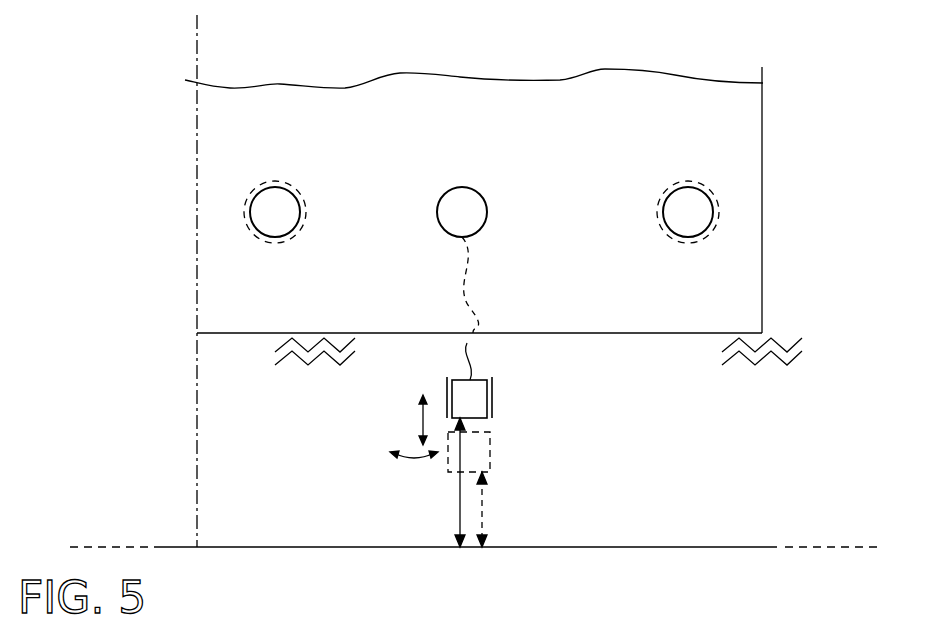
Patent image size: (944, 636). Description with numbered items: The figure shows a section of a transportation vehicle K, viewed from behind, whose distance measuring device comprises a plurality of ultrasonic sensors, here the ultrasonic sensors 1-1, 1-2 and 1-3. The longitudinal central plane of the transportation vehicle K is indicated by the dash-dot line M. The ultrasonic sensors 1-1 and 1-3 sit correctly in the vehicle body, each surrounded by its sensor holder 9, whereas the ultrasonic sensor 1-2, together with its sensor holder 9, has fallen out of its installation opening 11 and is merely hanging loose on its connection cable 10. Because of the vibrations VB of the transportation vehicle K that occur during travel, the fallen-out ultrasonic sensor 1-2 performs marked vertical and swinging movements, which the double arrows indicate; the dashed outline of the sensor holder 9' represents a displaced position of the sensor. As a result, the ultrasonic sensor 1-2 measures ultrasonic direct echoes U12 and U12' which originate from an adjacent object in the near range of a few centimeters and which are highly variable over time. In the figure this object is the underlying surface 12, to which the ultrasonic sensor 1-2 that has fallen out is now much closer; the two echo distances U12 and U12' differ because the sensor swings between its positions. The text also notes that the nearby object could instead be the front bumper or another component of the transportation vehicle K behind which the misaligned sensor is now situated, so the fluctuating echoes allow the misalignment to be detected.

The ultrasonic sensor 1-1 is at (695, 216).
The ultrasonic sensor 1-2 is at (470, 402).
The ultrasonic sensor 1-3 is at (275, 216).
The sensor holder 9 is at (474, 282).
The sensor holder 9' is at (503, 458).
The connection cable 10 is at (467, 343).
The installation opening 11 is at (454, 187).
The underlying surface 12 is at (166, 547).
The transportation vehicle K is at (774, 126).
The longitudinal central plane M is at (197, 395).
The vibrations VB is at (317, 365).
The ultrasonic direct echo U12 is at (407, 482).
The ultrasonic direct echo U12' is at (535, 509).